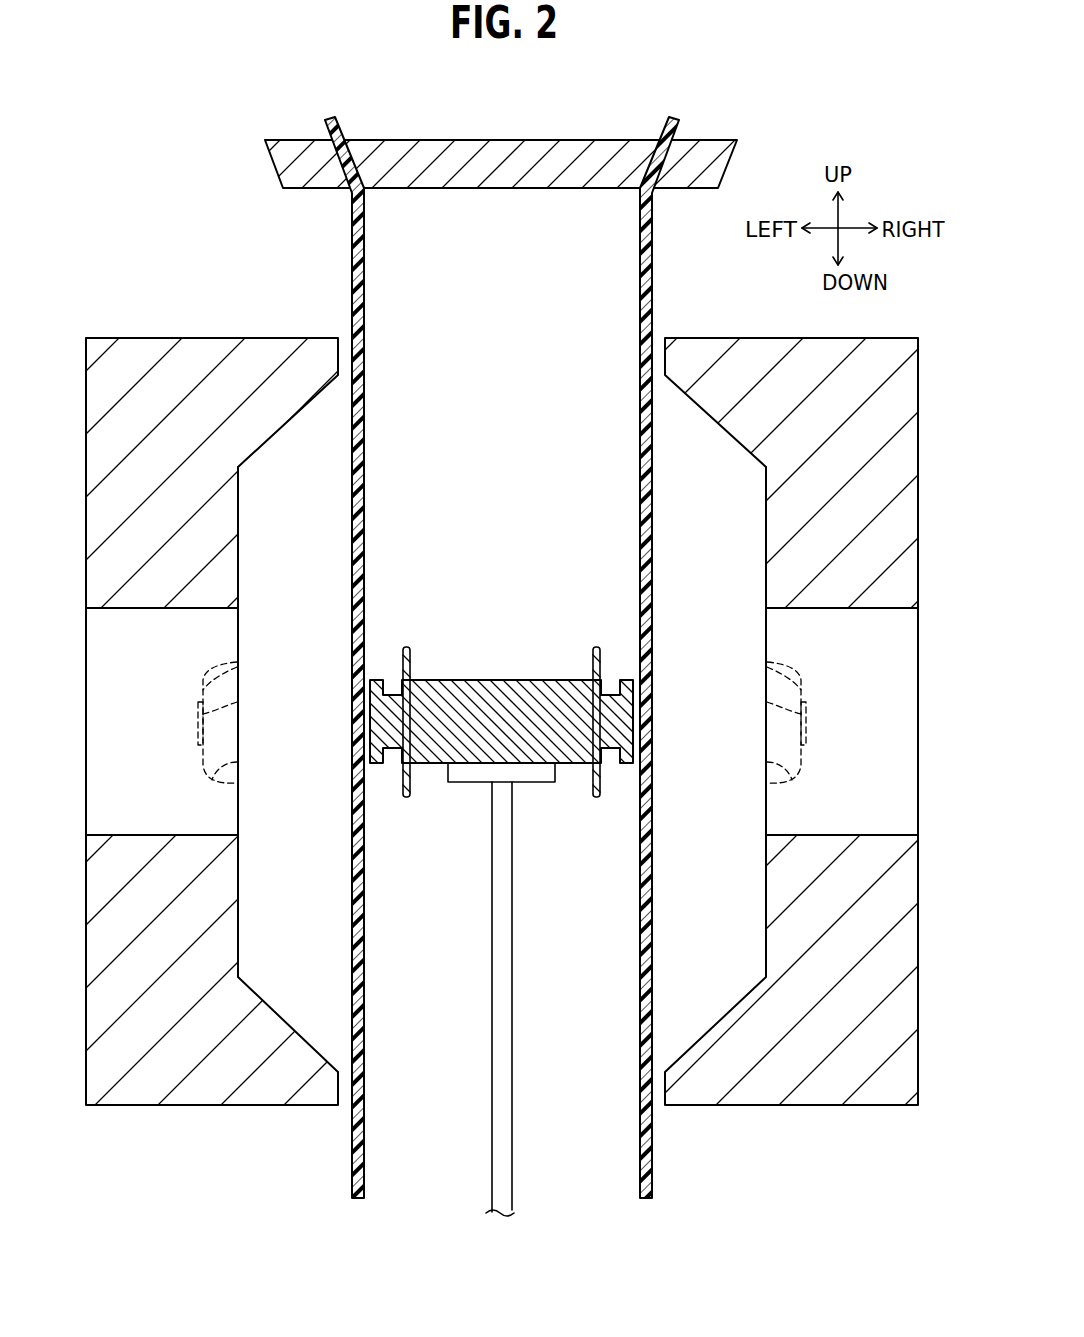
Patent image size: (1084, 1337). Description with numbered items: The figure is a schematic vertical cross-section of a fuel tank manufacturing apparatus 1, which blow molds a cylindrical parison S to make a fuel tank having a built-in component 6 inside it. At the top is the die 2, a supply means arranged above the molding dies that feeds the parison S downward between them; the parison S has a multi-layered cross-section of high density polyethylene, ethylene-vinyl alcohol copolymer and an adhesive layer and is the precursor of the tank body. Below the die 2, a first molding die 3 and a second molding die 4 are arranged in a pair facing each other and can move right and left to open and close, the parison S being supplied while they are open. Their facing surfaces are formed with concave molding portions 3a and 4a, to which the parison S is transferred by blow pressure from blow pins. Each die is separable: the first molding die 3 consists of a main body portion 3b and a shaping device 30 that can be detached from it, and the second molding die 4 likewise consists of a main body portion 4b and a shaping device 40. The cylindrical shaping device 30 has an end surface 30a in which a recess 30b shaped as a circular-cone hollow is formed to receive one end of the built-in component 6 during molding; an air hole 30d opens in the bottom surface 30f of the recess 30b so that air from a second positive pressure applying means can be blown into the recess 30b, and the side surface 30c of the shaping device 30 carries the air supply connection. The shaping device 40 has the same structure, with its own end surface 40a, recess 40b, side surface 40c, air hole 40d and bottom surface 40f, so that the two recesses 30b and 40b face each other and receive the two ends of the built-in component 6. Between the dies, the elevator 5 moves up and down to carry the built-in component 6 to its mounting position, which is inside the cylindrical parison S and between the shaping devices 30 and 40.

The fuel tank manufacturing apparatus 1 is at (722, 100).
The die 2 is at (540, 140).
The first molding die 3 is at (212, 338).
The molding portion 3a is at (243, 517).
The main body portion 3b is at (86, 455).
The second molding die 4 is at (768, 338).
The molding portion 4a is at (761, 517).
The main body portion 4b is at (918, 455).
The elevator 5 is at (512, 1002).
The built-in component 6 is at (505, 680).
The shaping device 30 is at (86, 635).
The end surface 30a is at (238, 635).
The recess 30b is at (237, 762).
The side surface 30c is at (192, 608).
The air hole 30d is at (237, 702).
The bottom surface 30f is at (237, 667).
The shaping device 40 is at (918, 635).
The end surface 40a is at (766, 635).
The recess 40b is at (767, 762).
The side surface 40c is at (812, 608).
The air hole 40d is at (767, 702).
The bottom surface 40f is at (767, 667).
The parison S is at (652, 275).